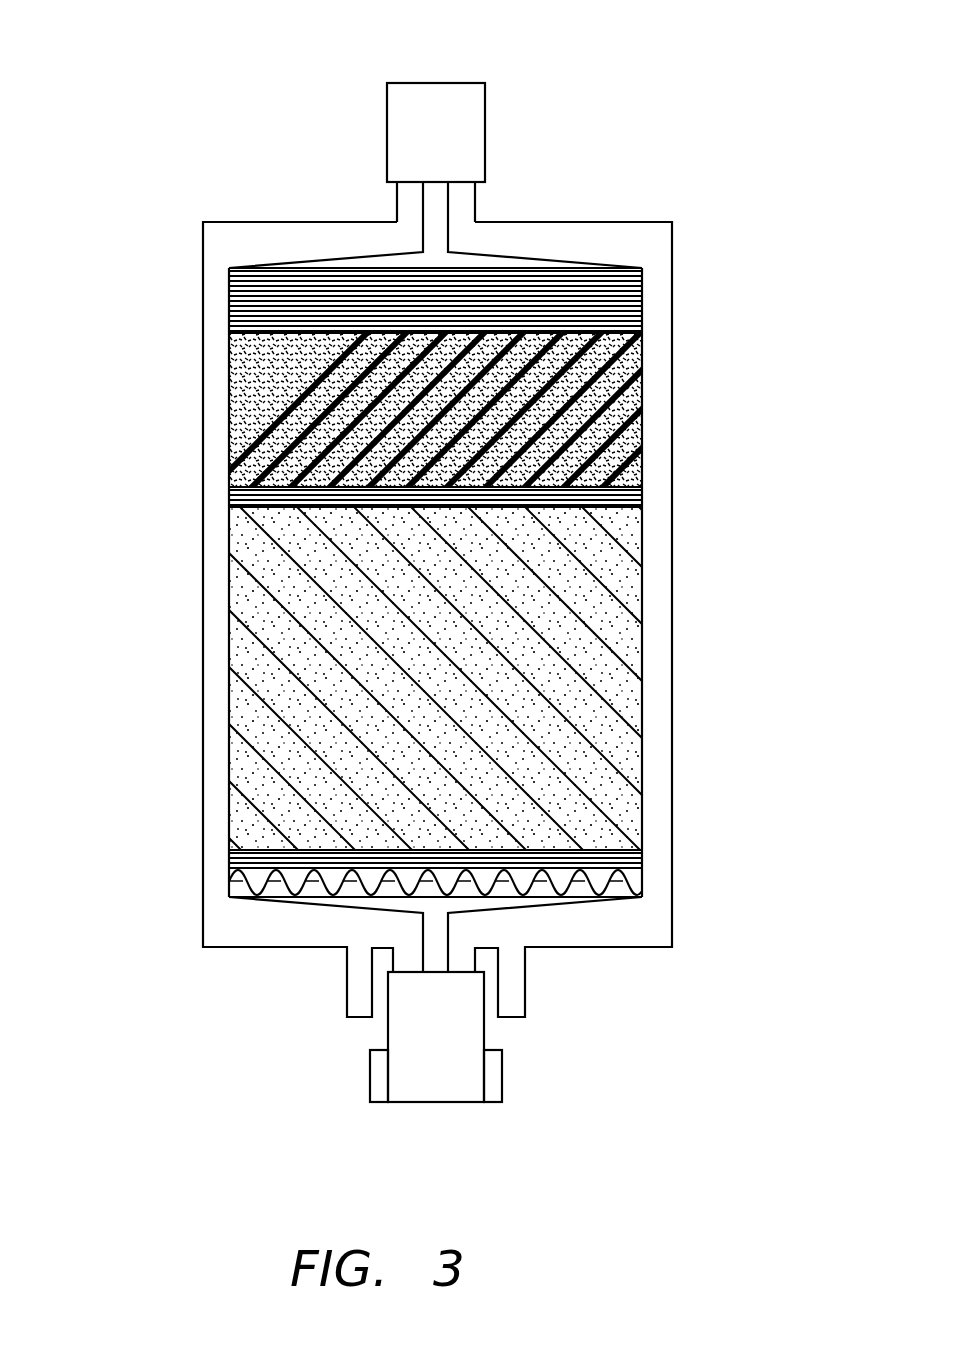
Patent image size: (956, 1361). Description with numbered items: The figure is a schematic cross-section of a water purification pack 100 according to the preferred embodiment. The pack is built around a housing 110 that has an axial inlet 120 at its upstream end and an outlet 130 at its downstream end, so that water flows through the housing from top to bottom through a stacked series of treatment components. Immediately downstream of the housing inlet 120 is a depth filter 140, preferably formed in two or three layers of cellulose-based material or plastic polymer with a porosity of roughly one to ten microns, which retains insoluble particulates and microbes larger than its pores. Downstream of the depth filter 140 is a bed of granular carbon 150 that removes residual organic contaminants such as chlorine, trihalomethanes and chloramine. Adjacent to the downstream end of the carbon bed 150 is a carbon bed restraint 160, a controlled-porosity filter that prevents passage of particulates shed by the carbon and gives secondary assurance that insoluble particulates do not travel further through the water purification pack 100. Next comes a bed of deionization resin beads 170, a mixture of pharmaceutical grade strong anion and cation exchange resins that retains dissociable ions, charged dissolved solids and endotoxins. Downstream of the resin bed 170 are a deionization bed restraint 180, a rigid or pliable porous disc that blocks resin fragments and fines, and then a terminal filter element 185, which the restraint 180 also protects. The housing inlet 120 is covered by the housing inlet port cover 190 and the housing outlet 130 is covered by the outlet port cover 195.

The water purification pack 100 is at (227, 60).
The housing 110 is at (662, 572).
The axial inlet 120 is at (440, 237).
The outlet 130 is at (437, 943).
The depth filter 140 is at (485, 297).
The bed of granular carbon 150 is at (642, 373).
The carbon bed restraint 160 is at (642, 488).
The bed of deionization resin beads 170 is at (567, 670).
The deionization bed restraint 180 is at (640, 853).
The terminal filter element 185 is at (630, 880).
The housing inlet port cover 190 is at (432, 113).
The outlet port cover 195 is at (437, 1075).